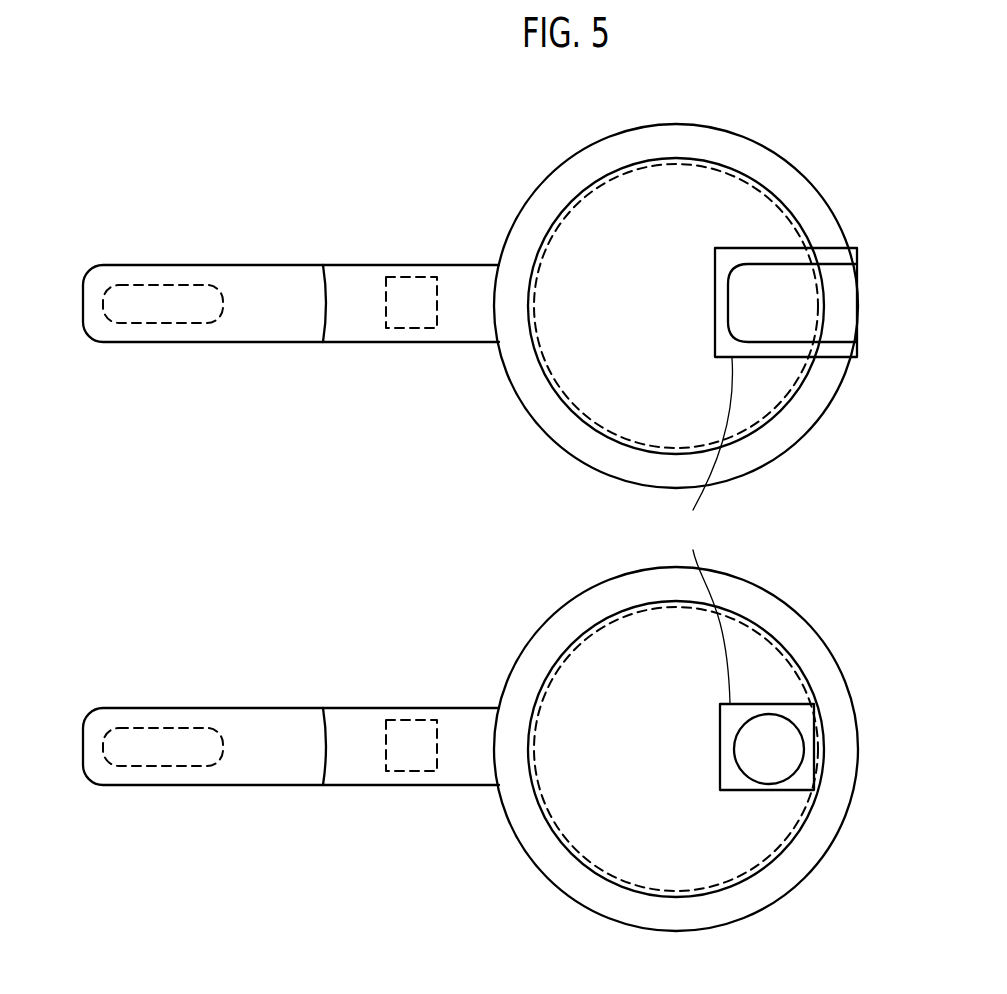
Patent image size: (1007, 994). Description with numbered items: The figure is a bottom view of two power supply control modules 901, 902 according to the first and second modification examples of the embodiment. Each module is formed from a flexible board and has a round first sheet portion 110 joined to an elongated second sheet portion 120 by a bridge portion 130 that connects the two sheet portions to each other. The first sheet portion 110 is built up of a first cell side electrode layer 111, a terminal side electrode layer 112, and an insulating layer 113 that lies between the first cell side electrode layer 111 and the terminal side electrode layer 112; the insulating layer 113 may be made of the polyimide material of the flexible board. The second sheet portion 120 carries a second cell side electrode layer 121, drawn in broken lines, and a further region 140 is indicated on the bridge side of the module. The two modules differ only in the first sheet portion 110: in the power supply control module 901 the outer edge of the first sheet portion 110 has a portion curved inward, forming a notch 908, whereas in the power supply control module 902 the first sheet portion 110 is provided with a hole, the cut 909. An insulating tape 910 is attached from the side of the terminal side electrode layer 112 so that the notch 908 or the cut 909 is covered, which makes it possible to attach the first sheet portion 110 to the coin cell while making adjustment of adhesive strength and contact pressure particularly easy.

The power supply control module 901 is at (93, 153).
The power supply control module 902 is at (93, 561).
The first sheet portion 110 is at (749, 527).
The first cell side electrode layer 111 is at (772, 188).
The terminal side electrode layer 112 is at (752, 220).
The insulating layer 113 is at (817, 215).
The second sheet portion 120 is at (231, 332).
The second cell side electrode layer 121 is at (157, 298).
The bridge portion 130 is at (374, 332).
The sensor area 140 is at (411, 317).
The notch 908 is at (795, 293).
The cut 909 is at (782, 745).
The insulating tape 910 is at (702, 530).